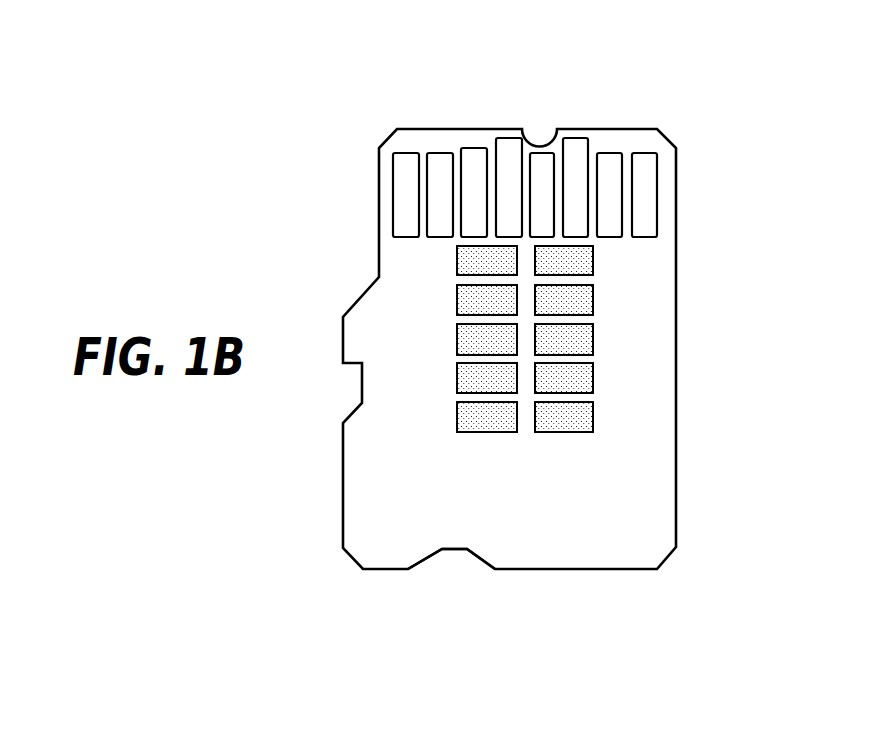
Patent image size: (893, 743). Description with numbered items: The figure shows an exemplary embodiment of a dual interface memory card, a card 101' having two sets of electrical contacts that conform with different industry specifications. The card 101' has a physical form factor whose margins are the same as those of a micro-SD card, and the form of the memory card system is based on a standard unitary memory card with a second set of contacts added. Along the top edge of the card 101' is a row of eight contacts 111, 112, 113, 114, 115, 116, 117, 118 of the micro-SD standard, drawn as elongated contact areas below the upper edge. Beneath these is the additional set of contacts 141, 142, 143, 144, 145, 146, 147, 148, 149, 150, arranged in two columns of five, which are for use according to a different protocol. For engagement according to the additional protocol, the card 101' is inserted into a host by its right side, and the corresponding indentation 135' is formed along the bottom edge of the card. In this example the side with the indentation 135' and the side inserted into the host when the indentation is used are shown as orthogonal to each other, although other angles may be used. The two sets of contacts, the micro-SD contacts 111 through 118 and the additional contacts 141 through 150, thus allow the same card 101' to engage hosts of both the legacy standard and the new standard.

The card 101' is at (509, 367).
The indentation 135' is at (429, 581).
The contact 111 is at (402, 153).
The contact 112 is at (432, 153).
The contact 113 is at (475, 148).
The contact 114 is at (513, 138).
The contact 115 is at (538, 153).
The contact 116 is at (568, 138).
The contact 117 is at (613, 153).
The contact 118 is at (645, 153).
The additional contact 141 is at (457, 262).
The additional contact 142 is at (457, 293).
The additional contact 143 is at (457, 333).
The additional contact 144 is at (457, 373).
The additional contact 145 is at (457, 410).
The additional contact 146 is at (593, 258).
The additional contact 147 is at (593, 293).
The additional contact 148 is at (593, 333).
The additional contact 149 is at (593, 373).
The additional contact 150 is at (593, 413).